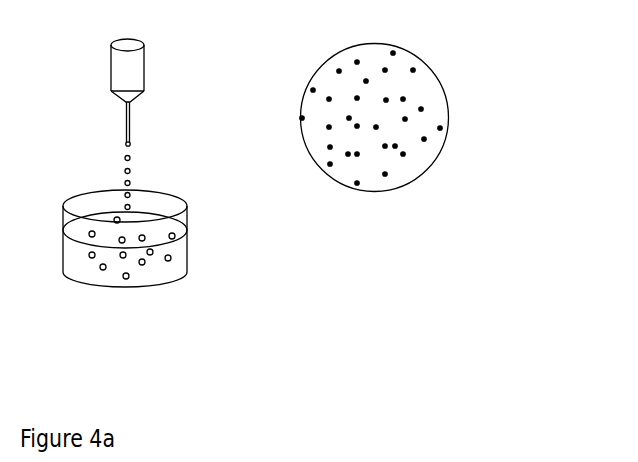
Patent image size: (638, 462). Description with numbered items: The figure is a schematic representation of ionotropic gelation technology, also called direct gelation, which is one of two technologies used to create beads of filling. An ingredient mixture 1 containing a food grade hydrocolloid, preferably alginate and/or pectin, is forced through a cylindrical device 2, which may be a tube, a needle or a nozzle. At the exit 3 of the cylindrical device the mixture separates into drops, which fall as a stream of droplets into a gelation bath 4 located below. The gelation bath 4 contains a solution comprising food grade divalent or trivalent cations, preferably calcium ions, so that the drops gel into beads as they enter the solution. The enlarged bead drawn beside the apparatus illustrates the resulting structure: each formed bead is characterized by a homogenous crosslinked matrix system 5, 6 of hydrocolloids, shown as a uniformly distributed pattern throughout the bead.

The ingredient mixture 1 is at (113, 73).
The cylindrical device 2 is at (113, 70).
The exit of the cylindrical device 3 is at (115, 124).
The gelation bath 4 is at (125, 262).
The homogenous crosslinked matrix system 5 is at (420, 71).
The homogenous crosslinked matrix system 6 is at (420, 148).